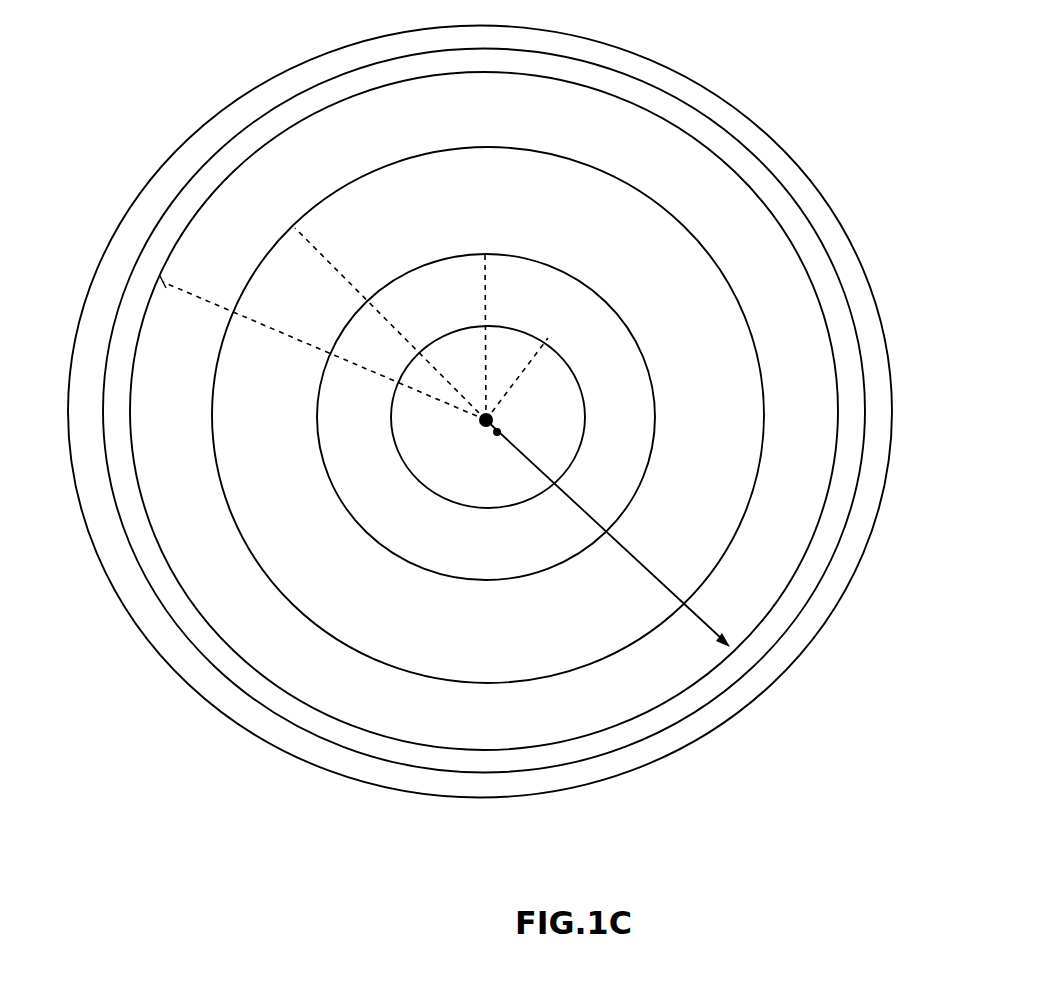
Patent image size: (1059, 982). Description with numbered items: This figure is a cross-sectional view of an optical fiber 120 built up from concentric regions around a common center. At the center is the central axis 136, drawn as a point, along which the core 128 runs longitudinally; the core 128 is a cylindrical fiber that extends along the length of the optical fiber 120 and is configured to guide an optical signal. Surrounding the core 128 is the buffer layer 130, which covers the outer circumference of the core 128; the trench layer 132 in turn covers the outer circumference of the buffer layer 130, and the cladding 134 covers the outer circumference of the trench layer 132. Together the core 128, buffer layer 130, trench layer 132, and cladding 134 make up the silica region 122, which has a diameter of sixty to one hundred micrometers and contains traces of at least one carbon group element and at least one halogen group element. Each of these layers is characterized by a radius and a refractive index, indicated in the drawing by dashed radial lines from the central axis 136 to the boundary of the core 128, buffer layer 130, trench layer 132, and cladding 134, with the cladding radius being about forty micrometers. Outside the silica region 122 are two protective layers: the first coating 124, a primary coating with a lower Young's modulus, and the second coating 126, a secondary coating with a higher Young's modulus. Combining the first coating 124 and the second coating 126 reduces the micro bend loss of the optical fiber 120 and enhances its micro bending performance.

The optical fiber 120 is at (88, 91).
The silica region 122 is at (655, 578).
The first coating 124 is at (830, 297).
The second coating 126 is at (808, 192).
The core 128 is at (484, 478).
The buffer layer 130 is at (424, 535).
The trench layer 132 is at (355, 608).
The cladding 134 is at (323, 675).
The central axis 136 is at (479, 424).